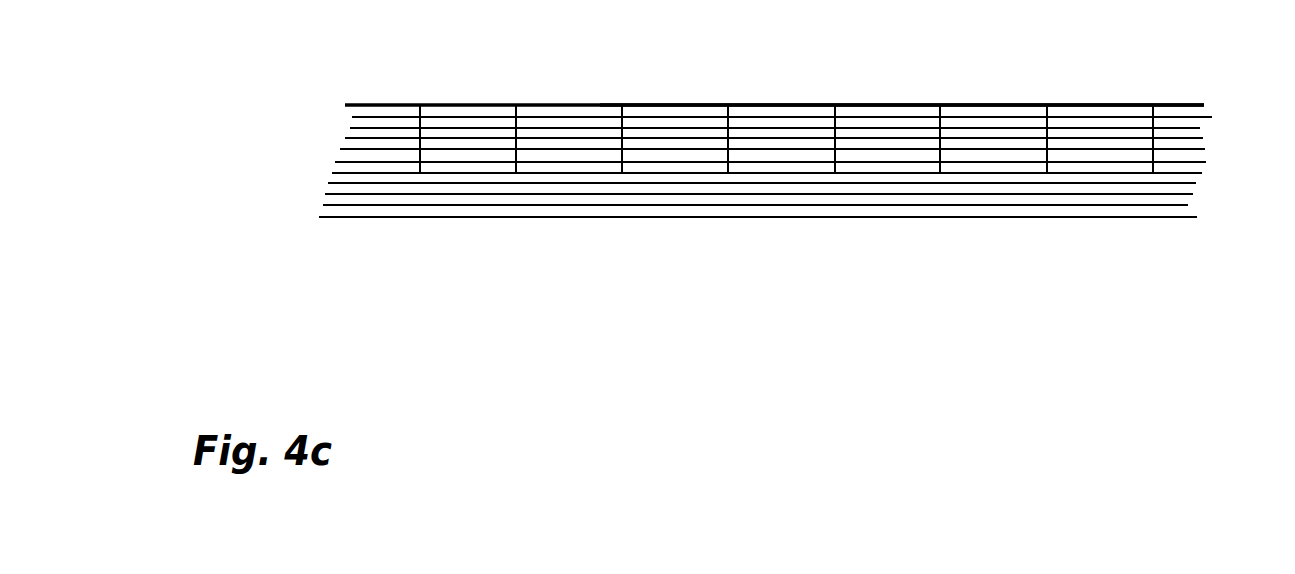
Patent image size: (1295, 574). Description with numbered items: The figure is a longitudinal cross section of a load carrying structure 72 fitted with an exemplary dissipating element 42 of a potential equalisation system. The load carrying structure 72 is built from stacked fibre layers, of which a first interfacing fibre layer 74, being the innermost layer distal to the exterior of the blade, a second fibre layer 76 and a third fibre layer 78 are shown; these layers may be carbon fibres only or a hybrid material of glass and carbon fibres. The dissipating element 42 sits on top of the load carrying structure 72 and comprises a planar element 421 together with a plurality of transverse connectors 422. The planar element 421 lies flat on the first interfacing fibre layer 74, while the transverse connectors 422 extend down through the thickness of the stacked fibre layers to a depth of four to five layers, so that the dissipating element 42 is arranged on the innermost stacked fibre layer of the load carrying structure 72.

The dissipating element 42 is at (388, 103).
The planar element 421 is at (598, 103).
The transverse connectors 422 is at (438, 112).
The load carrying structure 72 is at (1215, 220).
The first interfacing fibre layer 74 is at (352, 117).
The second fibre layer 76 is at (350, 128).
The third fibre layer 78 is at (345, 139).